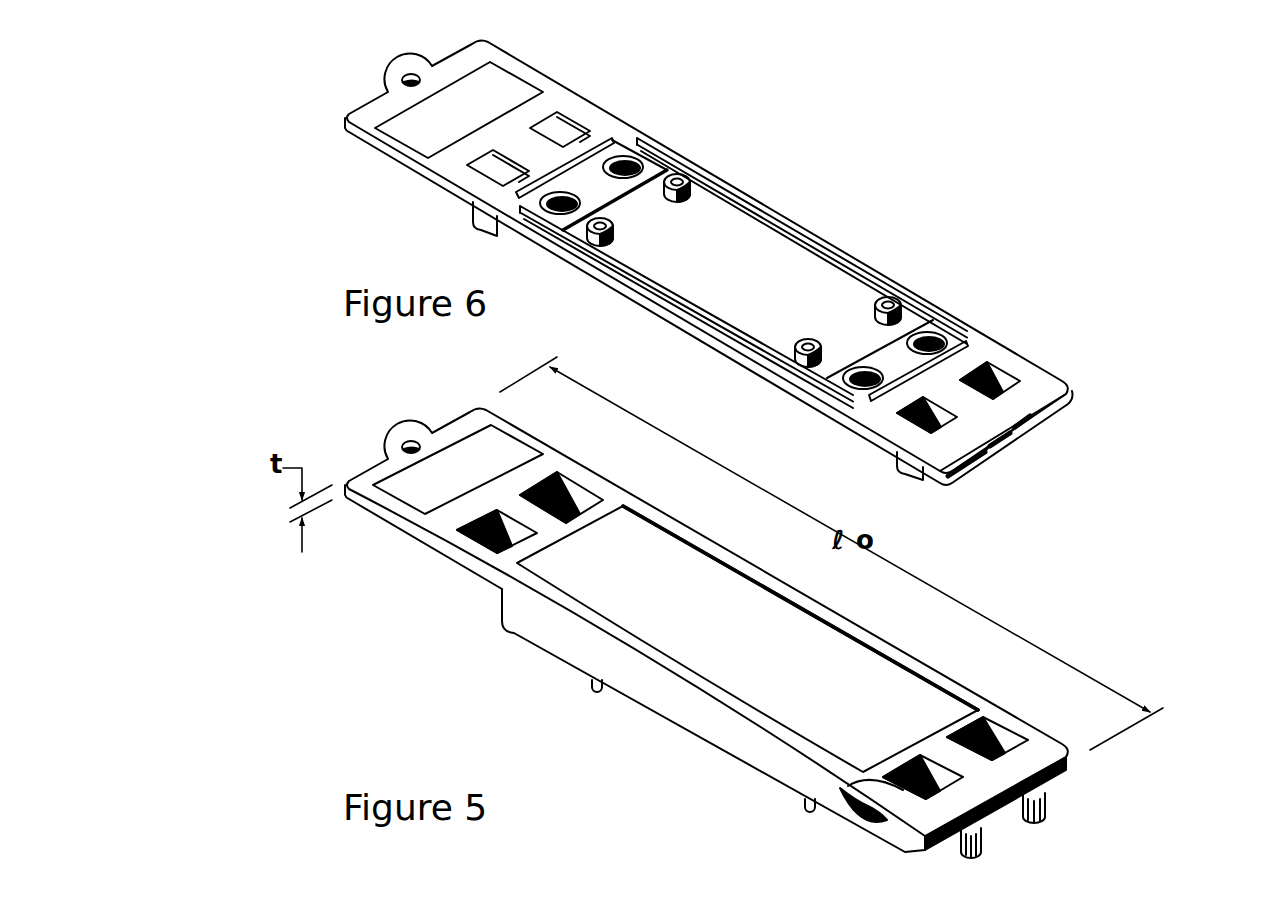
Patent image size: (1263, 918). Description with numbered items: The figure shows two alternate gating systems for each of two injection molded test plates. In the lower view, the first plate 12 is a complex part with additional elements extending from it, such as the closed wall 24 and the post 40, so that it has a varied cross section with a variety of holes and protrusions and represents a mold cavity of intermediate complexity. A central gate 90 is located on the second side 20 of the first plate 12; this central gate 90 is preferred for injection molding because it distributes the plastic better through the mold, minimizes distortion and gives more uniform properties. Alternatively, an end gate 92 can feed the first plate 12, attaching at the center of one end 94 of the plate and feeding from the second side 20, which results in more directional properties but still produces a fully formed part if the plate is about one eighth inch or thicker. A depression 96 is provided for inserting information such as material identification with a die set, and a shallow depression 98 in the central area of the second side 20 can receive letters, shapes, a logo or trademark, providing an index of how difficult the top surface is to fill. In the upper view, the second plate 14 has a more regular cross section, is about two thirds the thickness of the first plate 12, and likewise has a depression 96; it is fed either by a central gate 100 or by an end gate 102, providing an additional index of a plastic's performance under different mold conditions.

In FIG. 5, the first plate 12 is at (367, 462).
In FIG. 6, the second plate 14 is at (993, 460).
In FIG. 5, the second side 20 is at (835, 812).
In FIG. 5, the closed wall 24 is at (530, 613).
In FIG. 5, the post 40 is at (588, 683).
In FIG. 5, the central gate 90 is at (733, 642).
In FIG. 5, the end gate 92 is at (1013, 817).
In FIG. 5, the end 94 is at (1070, 792).
In FIG. 6, the depression 96 is at (487, 92).
In FIG. 5, the depression 96 is at (442, 490).
In FIG. 5, the shallow depression 98 is at (763, 680).
In FIG. 6, the central gate 100 is at (745, 273).
In FIG. 6, the end gate 102 is at (1027, 433).